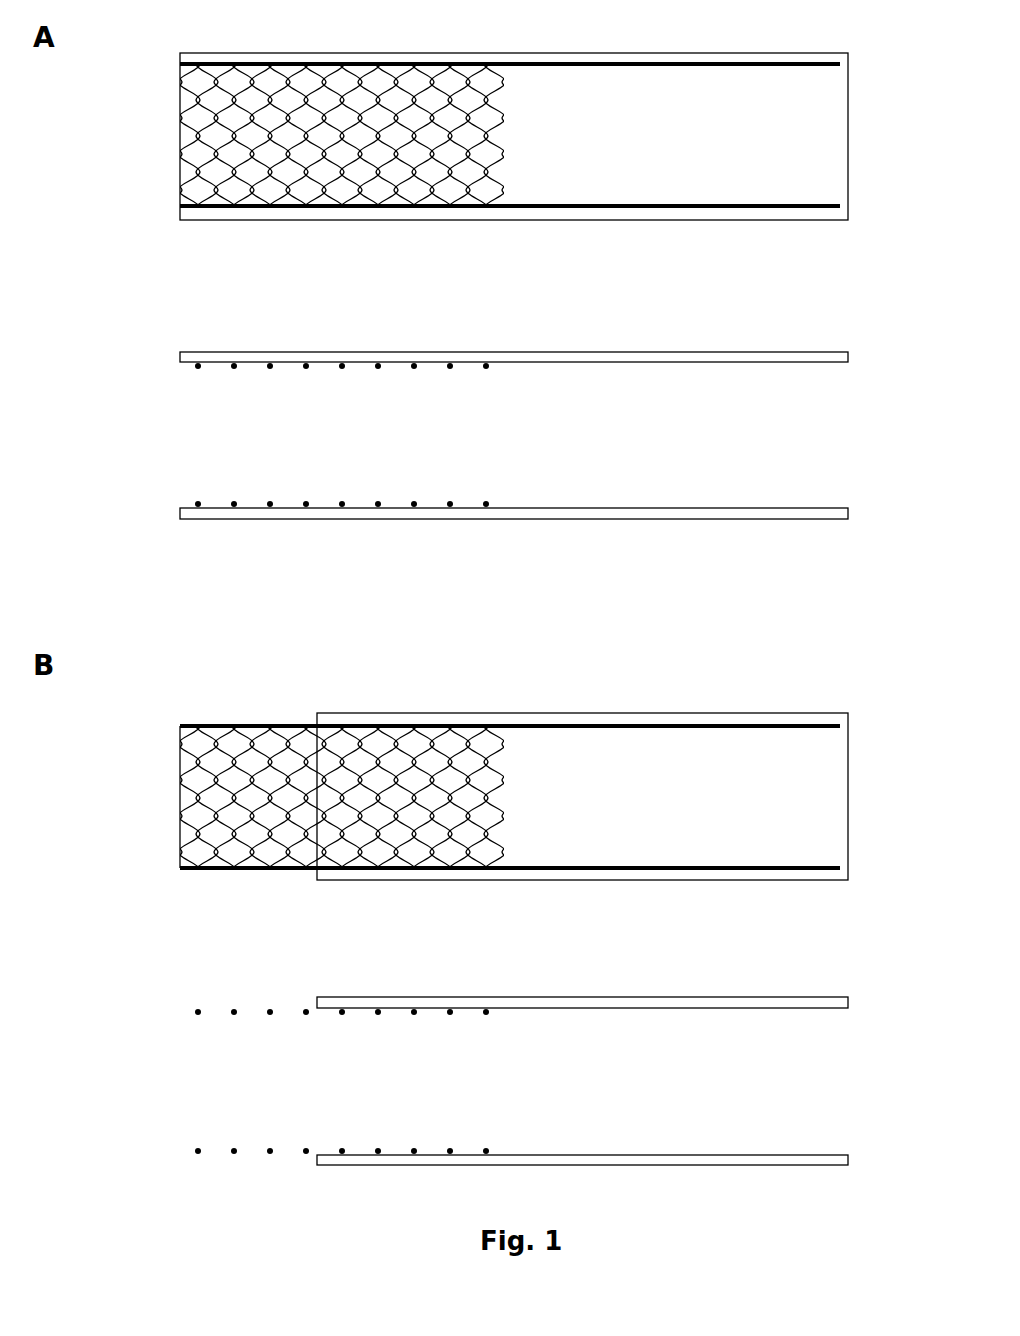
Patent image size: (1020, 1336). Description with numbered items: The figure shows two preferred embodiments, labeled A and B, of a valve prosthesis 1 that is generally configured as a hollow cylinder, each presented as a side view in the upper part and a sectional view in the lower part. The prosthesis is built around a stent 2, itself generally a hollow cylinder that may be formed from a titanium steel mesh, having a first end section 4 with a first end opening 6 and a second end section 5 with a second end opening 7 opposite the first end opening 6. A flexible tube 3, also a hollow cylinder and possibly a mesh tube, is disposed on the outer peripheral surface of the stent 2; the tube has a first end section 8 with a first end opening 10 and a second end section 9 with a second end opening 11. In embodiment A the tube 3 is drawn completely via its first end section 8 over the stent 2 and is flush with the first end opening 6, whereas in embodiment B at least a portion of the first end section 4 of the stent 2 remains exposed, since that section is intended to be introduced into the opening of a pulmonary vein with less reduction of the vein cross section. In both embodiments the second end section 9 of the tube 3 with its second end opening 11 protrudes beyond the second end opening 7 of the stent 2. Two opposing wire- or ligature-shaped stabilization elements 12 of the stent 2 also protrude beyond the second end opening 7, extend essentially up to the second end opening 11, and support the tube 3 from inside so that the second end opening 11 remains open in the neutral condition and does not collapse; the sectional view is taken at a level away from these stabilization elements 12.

The valve prosthesis 1 is at (157, 243).
The stent 2 is at (300, 178).
The flexible tube 3 is at (522, 357).
The first end section 4 is at (235, 170).
The second end section 5 is at (425, 135).
The first end opening 6 is at (167, 105).
The second end opening 7 is at (475, 460).
The first end section 8 is at (228, 58).
The second end section 9 is at (742, 357).
The first end opening 10 is at (167, 138).
The second end opening 11 is at (838, 135).
The wire- or ligature-shaped stabilization elements 12 is at (663, 63).